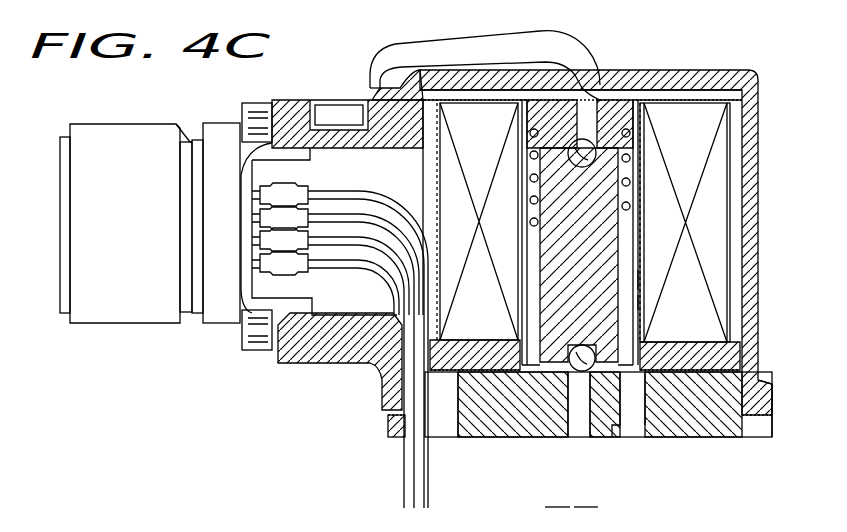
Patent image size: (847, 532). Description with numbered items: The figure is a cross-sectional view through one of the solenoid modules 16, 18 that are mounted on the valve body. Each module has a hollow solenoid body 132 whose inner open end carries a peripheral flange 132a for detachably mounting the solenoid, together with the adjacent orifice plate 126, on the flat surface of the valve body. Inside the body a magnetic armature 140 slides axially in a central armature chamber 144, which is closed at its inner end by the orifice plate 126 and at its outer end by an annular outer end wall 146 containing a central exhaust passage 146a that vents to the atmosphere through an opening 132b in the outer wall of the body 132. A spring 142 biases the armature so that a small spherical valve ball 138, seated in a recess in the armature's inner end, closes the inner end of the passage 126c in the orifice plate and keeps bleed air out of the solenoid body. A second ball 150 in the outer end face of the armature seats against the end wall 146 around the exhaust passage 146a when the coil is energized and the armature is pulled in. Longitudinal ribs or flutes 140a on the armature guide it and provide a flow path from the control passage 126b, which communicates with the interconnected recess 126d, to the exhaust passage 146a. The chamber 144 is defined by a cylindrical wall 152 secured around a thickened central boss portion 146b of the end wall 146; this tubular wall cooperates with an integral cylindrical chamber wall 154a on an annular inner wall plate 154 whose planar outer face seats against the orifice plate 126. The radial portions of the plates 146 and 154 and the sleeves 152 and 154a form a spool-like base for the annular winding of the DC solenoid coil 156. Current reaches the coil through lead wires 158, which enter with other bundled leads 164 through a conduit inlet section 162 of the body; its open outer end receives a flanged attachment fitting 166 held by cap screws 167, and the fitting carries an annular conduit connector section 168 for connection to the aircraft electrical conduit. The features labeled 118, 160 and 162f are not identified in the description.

The solenoid module 16 is at (560, 497).
The solenoid module 18 is at (585, 497).
The housing portion 118 is at (418, 42).
The orifice plate 126 is at (598, 428).
The control passage 126b is at (660, 392).
The passage 126c is at (577, 426).
The recess 126d is at (627, 430).
The solenoid body 132 is at (752, 70).
The peripheral flange 132a is at (773, 395).
The opening 132b is at (555, 55).
The valve ball 138 is at (588, 346).
The magnetic armature 140 is at (560, 248).
The ribs or flutes 140a is at (647, 280).
The spring 142 is at (640, 182).
The armature chamber 144 is at (597, 138).
The outer end wall 146 is at (548, 113).
The exhaust passage 146a is at (582, 88).
The central boss portion 146b is at (645, 118).
The outer valve ball 150 is at (546, 184).
The cylindrical chamber wall 152 is at (647, 152).
The inner wall plate 154 is at (718, 356).
The cylindrical chamber wall 154a is at (646, 302).
The solenoid coil 156 is at (715, 233).
The lead wires 158 is at (328, 218).
The cover 160 is at (200, 2).
The conduit inlet section 162 is at (345, 306).
The connector body passage 162f is at (458, 418).
The leads 164 is at (353, 238).
The attachment fitting 166 is at (218, 123).
The cap screws 167 is at (251, 102).
The conduit connector section 168 is at (60, 232).